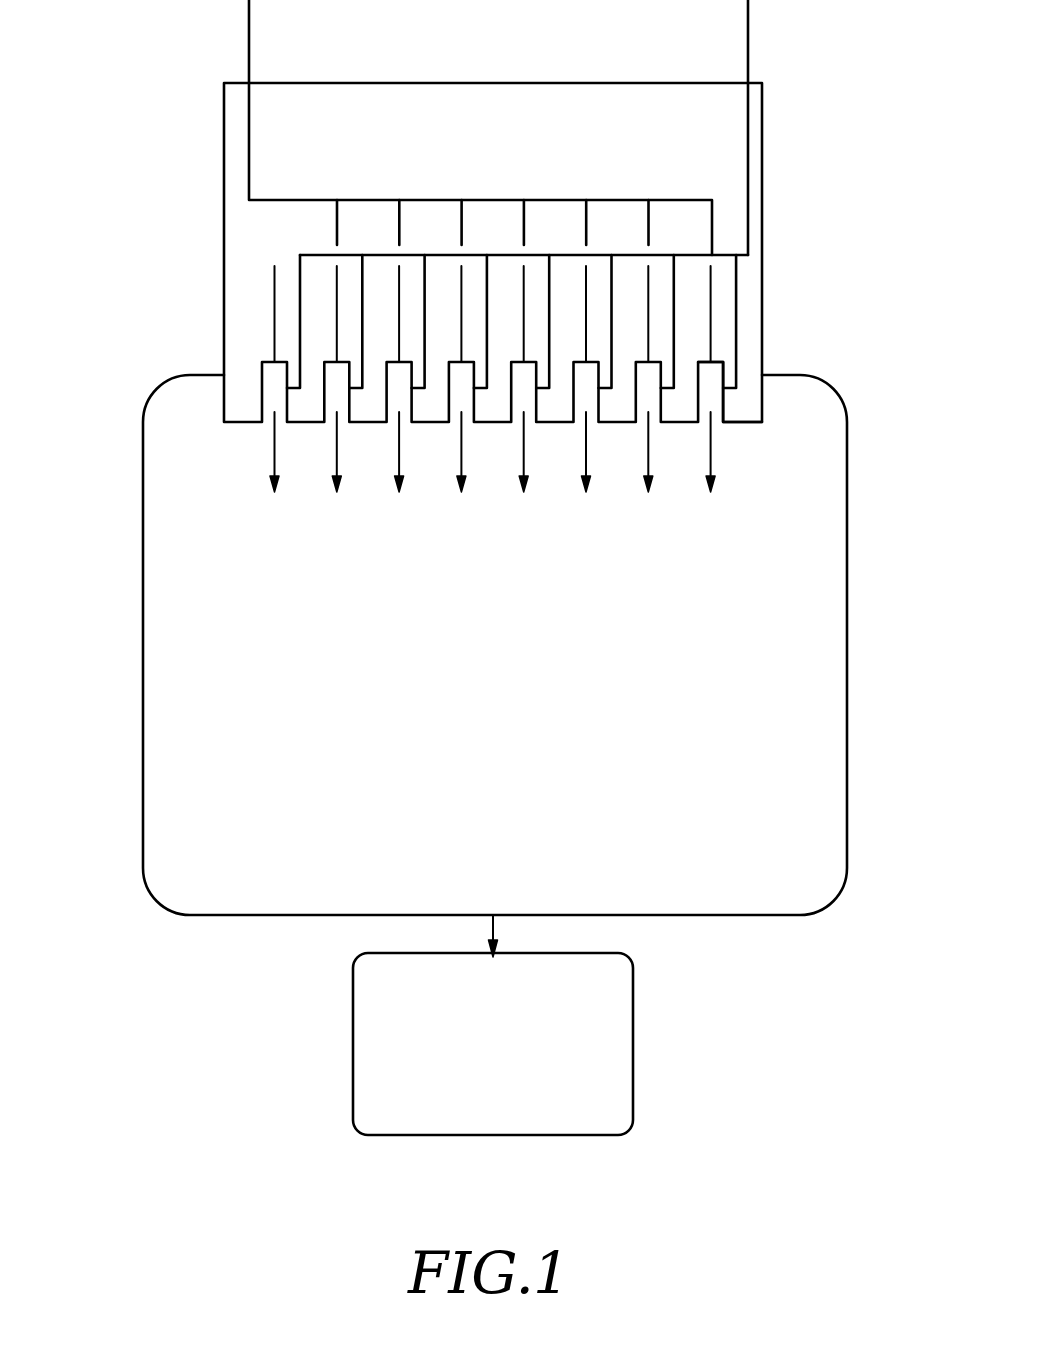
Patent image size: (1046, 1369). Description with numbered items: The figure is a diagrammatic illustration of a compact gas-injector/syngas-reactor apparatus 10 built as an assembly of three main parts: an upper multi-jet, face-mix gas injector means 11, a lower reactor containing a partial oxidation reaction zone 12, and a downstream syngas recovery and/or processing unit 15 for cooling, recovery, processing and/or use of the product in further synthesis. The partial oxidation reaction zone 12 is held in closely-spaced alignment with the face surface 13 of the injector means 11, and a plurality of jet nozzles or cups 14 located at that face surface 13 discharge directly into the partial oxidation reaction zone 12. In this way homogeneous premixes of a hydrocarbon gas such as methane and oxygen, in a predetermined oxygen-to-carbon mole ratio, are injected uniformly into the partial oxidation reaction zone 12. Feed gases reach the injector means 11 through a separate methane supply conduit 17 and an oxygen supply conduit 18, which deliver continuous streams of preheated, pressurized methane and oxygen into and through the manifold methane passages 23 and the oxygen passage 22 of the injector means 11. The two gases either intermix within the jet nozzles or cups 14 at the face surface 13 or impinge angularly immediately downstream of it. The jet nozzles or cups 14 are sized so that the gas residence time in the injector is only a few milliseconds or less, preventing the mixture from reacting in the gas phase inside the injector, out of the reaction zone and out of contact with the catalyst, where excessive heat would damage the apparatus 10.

The gas-injector/syngas-reactor apparatus 10 is at (203, 343).
The gas injector means 11 is at (765, 298).
The partial oxidation reaction zone 12 is at (846, 602).
The face surface 13 is at (738, 423).
The jet nozzles or cups 14 is at (722, 410).
The syngas recovery and/or processing unit 15 is at (611, 1107).
The methane supply conduit 17 is at (750, 33).
The oxygen supply conduit 18 is at (249, 22).
The oxygen passage 22 is at (620, 200).
The manifold methane passages 23 is at (298, 278).